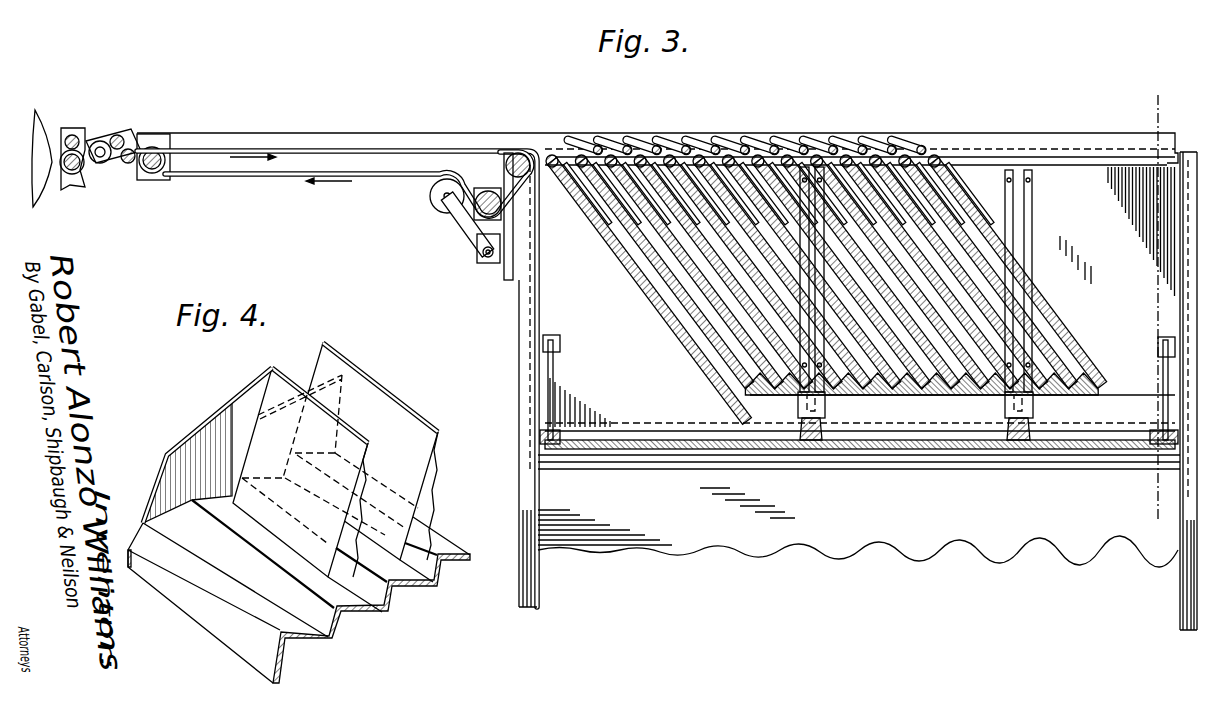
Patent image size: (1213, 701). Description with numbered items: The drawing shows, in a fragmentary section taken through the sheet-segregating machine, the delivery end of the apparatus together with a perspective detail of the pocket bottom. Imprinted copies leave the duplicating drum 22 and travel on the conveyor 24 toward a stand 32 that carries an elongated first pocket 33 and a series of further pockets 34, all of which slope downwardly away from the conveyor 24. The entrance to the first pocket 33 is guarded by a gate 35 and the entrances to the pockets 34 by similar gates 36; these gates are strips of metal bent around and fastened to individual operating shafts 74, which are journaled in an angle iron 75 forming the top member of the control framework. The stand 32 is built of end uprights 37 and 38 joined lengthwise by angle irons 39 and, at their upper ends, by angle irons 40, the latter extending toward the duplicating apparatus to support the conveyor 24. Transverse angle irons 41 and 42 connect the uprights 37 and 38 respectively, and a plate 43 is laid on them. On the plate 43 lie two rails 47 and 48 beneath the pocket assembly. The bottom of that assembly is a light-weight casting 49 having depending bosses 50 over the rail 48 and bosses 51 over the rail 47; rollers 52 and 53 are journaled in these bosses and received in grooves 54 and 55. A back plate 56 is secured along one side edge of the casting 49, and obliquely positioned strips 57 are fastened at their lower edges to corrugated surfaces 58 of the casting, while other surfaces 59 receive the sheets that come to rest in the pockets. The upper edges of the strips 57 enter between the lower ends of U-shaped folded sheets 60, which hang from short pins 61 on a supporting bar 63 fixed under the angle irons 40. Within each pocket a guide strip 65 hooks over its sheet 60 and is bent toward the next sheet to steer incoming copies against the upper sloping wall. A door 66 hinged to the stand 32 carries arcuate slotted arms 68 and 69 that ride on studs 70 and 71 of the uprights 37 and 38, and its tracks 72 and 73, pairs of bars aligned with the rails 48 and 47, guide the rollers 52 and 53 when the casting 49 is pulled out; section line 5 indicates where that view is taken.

In FIG. 3, the duplicating drum 22 is at (47, 120).
In FIG. 3, the conveyor 24 is at (368, 118).
In FIG. 3, the stand 32 is at (948, 132).
In FIG. 3, the first pocket 33 is at (703, 365).
In FIG. 3, the pockets 34 is at (790, 350).
In FIG. 3, the gate 35 is at (545, 140).
In FIG. 3, the gates 36 is at (625, 142).
In FIG. 3, the end uprights 37 is at (528, 466).
In FIG. 3, the end uprights 38 is at (1186, 595).
In FIG. 3, the angle irons 39 is at (780, 469).
In FIG. 3, the angle irons 40 is at (1055, 142).
In FIG. 3, the angle iron 41 is at (540, 438).
In FIG. 3, the angle iron 42 is at (1153, 456).
In FIG. 3, the plate 43 is at (935, 453).
In FIG. 3, the rail 47 is at (1020, 453).
In FIG. 3, the rail 48 is at (825, 452).
In FIG. 3, the casting 49 is at (1068, 397).
In FIG. 4, the casting 49 is at (200, 625).
In FIG. 3, the depending bosses 50 is at (815, 405).
In FIG. 3, the depending bosses 51 is at (1010, 407).
In FIG. 3, the rollers 52 is at (822, 427).
In FIG. 3, the rollers 53 is at (1026, 411).
In FIG. 3, the grooves 54 is at (1012, 422).
In FIG. 3, the grooves 55 is at (742, 412).
In FIG. 4, the back plate 56 is at (226, 428).
In FIG. 3, the strips 57 is at (1050, 373).
In FIG. 4, the strips 57 is at (377, 393).
In FIG. 4, the surfaces 58 is at (415, 552).
In FIG. 3, the surfaces 59 is at (898, 388).
In FIG. 4, the surfaces 59 is at (350, 600).
In FIG. 3, the folded sheets 60 is at (687, 320).
In FIG. 3, the pins 61 is at (676, 152).
In FIG. 3, the supporting bar 63 is at (1023, 160).
In FIG. 3, the guide strip 65 is at (632, 207).
In FIG. 3, the door 66 is at (1070, 177).
In FIG. 3, the arcuate slotted arm 68 is at (547, 378).
In FIG. 3, the arcuate slotted arm 69 is at (1163, 376).
In FIG. 3, the stud 70 is at (542, 345).
In FIG. 3, the stud 71 is at (1160, 346).
In FIG. 3, the track 72 is at (1030, 216).
In FIG. 3, the track 73 is at (785, 276).
In FIG. 3, the operating shafts 74 is at (738, 148).
In FIG. 3, the angle iron 75 is at (795, 133).
In FIG. 3, the section line 5- 5 is at (1158, 512).